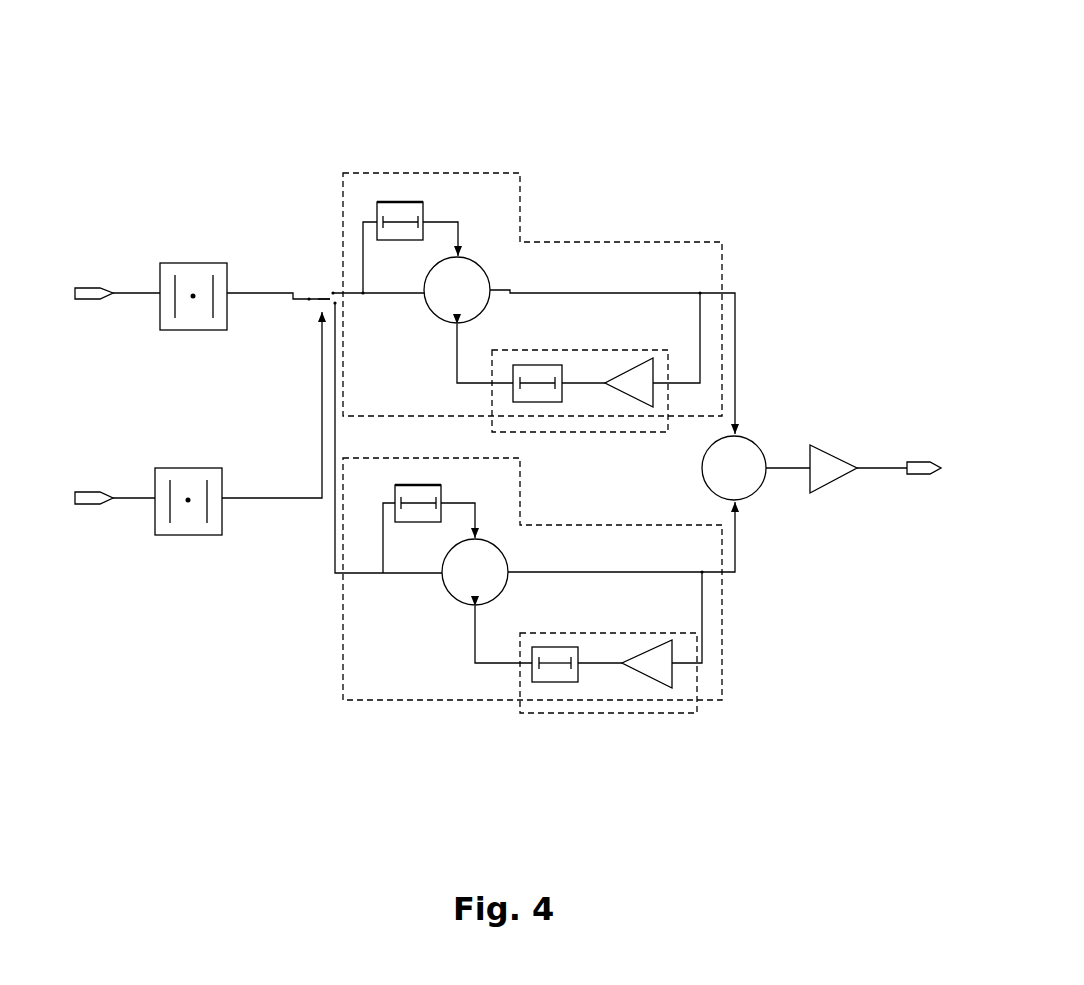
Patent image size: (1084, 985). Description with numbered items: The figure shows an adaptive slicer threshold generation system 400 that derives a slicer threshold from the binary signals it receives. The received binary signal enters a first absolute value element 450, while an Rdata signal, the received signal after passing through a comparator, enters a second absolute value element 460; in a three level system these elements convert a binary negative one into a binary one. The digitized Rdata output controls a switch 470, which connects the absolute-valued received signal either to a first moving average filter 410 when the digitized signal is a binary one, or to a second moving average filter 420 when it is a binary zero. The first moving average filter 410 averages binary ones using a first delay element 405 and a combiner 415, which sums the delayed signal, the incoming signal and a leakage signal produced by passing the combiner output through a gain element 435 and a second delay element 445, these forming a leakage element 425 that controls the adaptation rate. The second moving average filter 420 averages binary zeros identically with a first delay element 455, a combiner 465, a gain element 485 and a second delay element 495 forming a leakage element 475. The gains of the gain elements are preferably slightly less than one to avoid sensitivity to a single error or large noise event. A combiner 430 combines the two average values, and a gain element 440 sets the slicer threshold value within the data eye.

The adaptive slicer threshold generation system 400 is at (510, 318).
The first delay element 405 is at (383, 246).
The first moving average filter 410 is at (492, 172).
The combiner 415 is at (436, 328).
The second moving average filter 420 is at (493, 702).
The leakage element 425 is at (589, 435).
The combiner 430 is at (766, 441).
The gain element 435 is at (646, 359).
The gain element 440 is at (844, 488).
The second delay element 445 is at (564, 362).
The first absolute value element 450 is at (195, 262).
The first delay element 455 is at (398, 529).
The second absolute value element 460 is at (195, 537).
The combiner 465 is at (449, 595).
The switch 470 is at (305, 318).
The leakage element 475 is at (616, 718).
The gain element 485 is at (654, 641).
The second delay element 495 is at (574, 643).